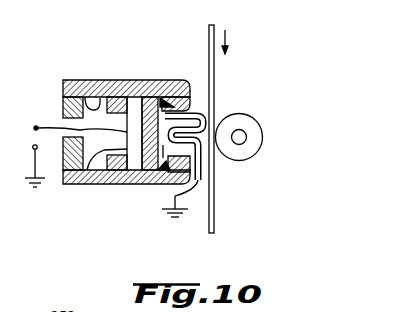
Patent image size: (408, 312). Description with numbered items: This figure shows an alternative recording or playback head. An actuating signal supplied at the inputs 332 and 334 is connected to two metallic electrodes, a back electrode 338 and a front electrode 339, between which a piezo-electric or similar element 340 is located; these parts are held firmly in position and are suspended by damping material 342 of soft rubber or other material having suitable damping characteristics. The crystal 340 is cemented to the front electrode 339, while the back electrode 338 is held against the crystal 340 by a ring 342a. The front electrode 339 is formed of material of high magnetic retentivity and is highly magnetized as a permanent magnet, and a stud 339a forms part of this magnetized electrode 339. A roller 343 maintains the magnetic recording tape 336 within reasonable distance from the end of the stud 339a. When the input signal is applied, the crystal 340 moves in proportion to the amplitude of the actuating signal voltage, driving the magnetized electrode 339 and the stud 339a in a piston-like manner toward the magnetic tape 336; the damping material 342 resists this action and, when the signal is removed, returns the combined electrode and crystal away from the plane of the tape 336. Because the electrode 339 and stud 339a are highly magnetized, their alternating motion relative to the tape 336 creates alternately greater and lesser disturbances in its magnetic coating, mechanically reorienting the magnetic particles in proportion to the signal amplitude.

The actuating signal input 332 is at (36, 126).
The actuating signal input 334 is at (38, 149).
The magnetic recording tape 336 is at (215, 87).
The back electrode 338 is at (87, 170).
The front electrode 339 is at (145, 173).
The stud 339a is at (201, 112).
The piezo-electric element 340 is at (146, 106).
The damping material 342 is at (187, 92).
The ring 342a is at (102, 80).
The roller 343 is at (257, 154).